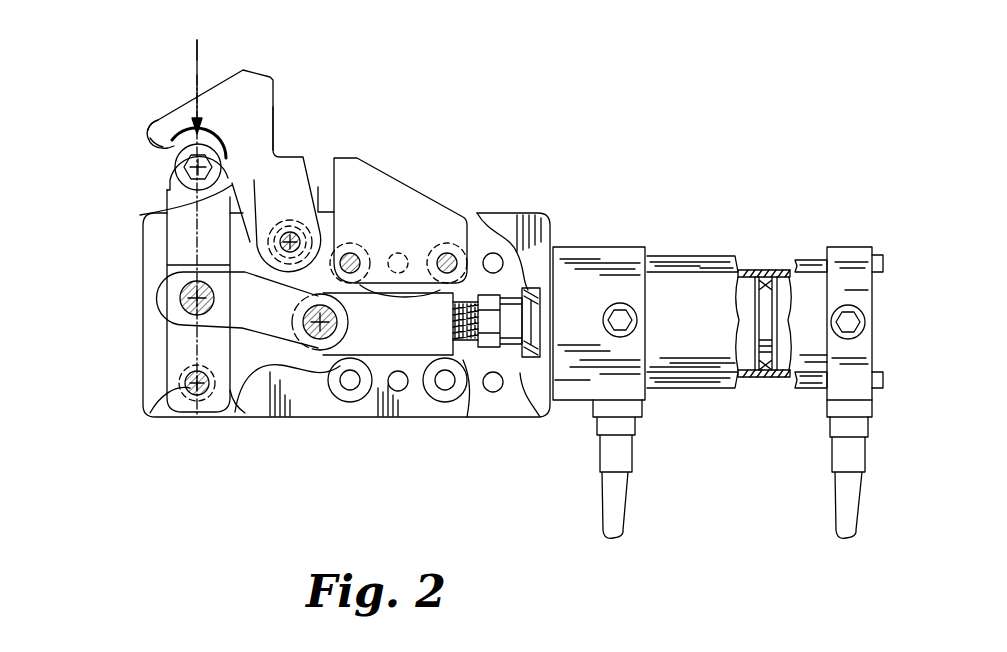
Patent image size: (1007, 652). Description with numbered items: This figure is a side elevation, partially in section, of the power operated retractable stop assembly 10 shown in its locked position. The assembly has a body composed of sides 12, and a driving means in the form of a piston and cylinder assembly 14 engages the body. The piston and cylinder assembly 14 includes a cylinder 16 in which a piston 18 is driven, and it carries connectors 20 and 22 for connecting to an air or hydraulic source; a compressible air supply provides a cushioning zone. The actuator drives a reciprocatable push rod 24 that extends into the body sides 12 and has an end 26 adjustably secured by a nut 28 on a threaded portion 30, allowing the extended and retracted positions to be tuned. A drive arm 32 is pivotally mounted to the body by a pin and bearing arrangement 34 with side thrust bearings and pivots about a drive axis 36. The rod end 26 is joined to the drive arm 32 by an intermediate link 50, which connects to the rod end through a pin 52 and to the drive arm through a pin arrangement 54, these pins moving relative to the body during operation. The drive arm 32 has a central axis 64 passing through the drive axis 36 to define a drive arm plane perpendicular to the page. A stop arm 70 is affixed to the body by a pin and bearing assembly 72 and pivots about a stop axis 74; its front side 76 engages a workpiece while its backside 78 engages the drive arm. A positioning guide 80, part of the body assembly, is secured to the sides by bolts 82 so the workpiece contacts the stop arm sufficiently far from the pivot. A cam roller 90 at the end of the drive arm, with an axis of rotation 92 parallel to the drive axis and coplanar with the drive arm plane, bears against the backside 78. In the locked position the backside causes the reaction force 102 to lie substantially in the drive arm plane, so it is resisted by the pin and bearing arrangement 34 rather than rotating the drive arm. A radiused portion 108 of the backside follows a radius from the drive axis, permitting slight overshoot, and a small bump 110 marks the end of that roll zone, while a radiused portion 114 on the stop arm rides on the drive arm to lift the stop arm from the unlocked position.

The stop assembly 10 is at (562, 113).
The body sides 12 is at (553, 240).
The piston and cylinder assembly 14 is at (758, 250).
The cylinder 16 is at (707, 257).
The piston 18 is at (780, 272).
The connector 20 is at (640, 423).
The connector 22 is at (828, 425).
The push rod 24 is at (517, 360).
The end of reciprocatable member 26 is at (400, 358).
The nut 28 is at (500, 360).
The threaded portion 30 is at (470, 360).
The drive arm 32 is at (282, 400).
The pin and bearing arrangement 34 is at (238, 413).
The drive axis 36 is at (195, 400).
The intermediate link 50 is at (368, 256).
The pin 52 is at (348, 395).
The pin arrangement 54 is at (190, 298).
The central axis 64 is at (240, 338).
The stop arm 70 is at (273, 90).
The pin and bearing assembly 72 is at (286, 232).
The stop axis 74 is at (298, 236).
The front side 76 is at (273, 107).
The backside 78 is at (163, 212).
The positioning guide 80 is at (437, 206).
The bolts 82 is at (358, 268).
The cam roller 90 is at (168, 163).
The axis of rotation 92 is at (198, 168).
The reaction force 102 is at (197, 70).
The radiused portion 108 is at (203, 88).
The bump 110 is at (163, 147).
The radiused portion 114 is at (157, 127).